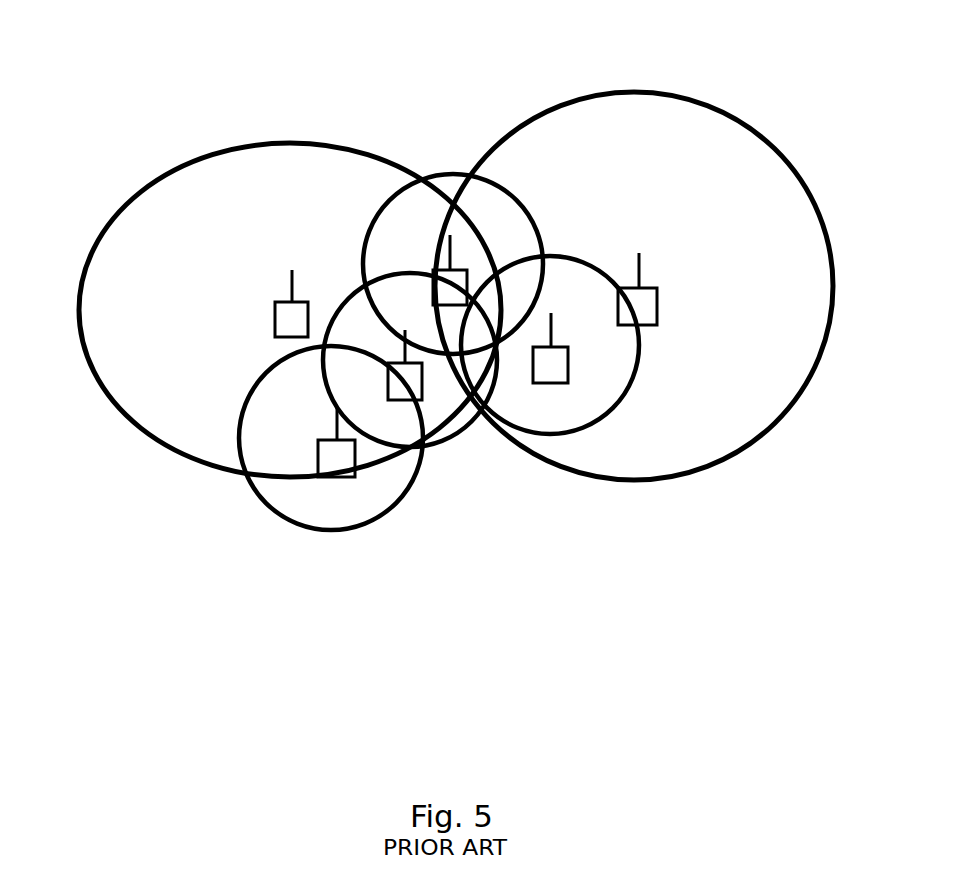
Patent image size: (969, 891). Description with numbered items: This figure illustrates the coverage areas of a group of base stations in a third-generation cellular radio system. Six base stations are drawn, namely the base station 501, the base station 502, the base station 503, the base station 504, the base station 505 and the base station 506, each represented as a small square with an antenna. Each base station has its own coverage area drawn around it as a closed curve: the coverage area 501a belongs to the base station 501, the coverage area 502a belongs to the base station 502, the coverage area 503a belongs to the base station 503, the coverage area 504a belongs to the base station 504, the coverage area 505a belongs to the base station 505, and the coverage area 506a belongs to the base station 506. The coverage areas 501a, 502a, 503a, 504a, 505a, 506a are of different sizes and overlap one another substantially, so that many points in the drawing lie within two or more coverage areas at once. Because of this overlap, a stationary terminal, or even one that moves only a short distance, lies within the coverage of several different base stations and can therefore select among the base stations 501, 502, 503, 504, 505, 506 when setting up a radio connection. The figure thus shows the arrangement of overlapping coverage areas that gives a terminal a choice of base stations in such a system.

The base station 501 is at (285, 320).
The coverage area 501a is at (78, 292).
The base station 502 is at (658, 313).
The coverage area 502a is at (640, 92).
The base station 503 is at (337, 465).
The coverage area 503a is at (380, 520).
The base station 504 is at (427, 397).
The coverage area 504a is at (473, 410).
The base station 505 is at (467, 303).
The coverage area 505a is at (533, 310).
The base station 506 is at (567, 373).
The coverage area 506a is at (630, 385).